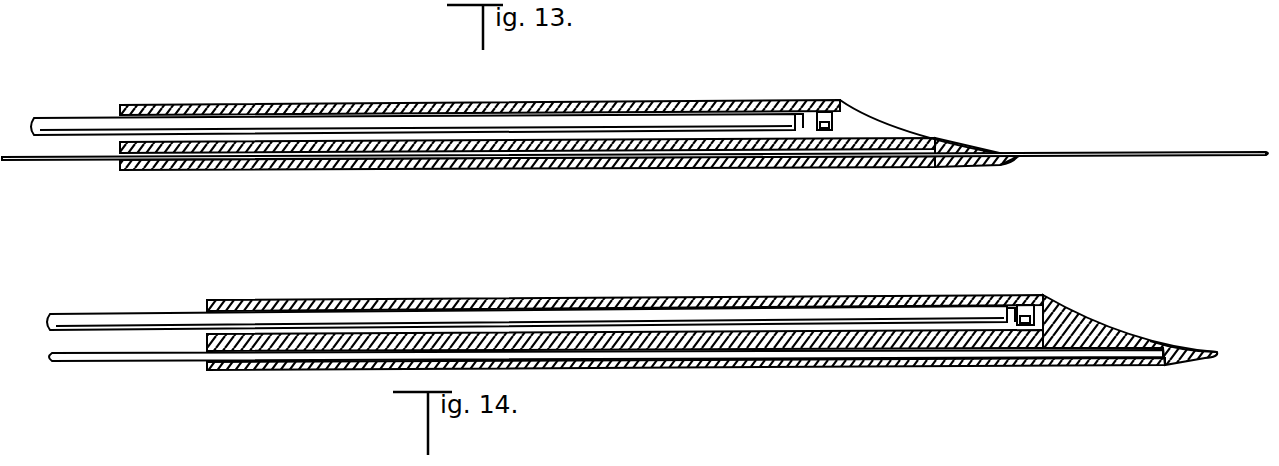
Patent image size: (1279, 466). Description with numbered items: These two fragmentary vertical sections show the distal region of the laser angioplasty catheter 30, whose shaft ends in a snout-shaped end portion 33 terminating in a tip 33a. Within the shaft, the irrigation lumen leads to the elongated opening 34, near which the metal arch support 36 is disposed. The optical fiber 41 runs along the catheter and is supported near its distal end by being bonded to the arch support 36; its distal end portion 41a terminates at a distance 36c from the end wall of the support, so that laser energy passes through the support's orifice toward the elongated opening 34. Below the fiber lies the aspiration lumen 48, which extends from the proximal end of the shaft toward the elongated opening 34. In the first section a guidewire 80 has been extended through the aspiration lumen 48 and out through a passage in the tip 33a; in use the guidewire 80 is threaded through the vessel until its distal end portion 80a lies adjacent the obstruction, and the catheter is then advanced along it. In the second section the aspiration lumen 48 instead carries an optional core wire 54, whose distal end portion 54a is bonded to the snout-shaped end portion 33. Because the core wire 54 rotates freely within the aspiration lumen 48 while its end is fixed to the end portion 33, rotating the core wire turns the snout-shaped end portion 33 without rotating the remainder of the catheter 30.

In FIG. 13, the laser angioplasty catheter 30 is at (643, 174).
In FIG. 14, the laser angioplasty catheter 30 is at (636, 378).
In FIG. 13, the snout-shaped end portion 33 is at (922, 122).
In FIG. 14, the snout-shaped end portion 33 is at (1162, 335).
In FIG. 13, the tip 33a is at (1020, 160).
In FIG. 14, the elongated opening 34 is at (1063, 318).
In FIG. 13, the arch support 36 is at (418, 113).
In FIG. 14, the arch support 36 is at (420, 308).
In FIG. 13, the distance 36c is at (809, 116).
In FIG. 14, the distance 36c is at (1018, 308).
In FIG. 13, the optical fiber 41 is at (160, 129).
In FIG. 13, the distal end portion 41a is at (804, 122).
In FIG. 13, the aspiration lumen 48 is at (193, 170).
In FIG. 14, the aspiration lumen 48 is at (278, 352).
In FIG. 14, the core wire 54 is at (105, 362).
In FIG. 14, the distal end portion 54a is at (1158, 357).
In FIG. 13, the guidewire 80 is at (1113, 150).
In FIG. 13, the distal end portion 80a is at (43, 164).